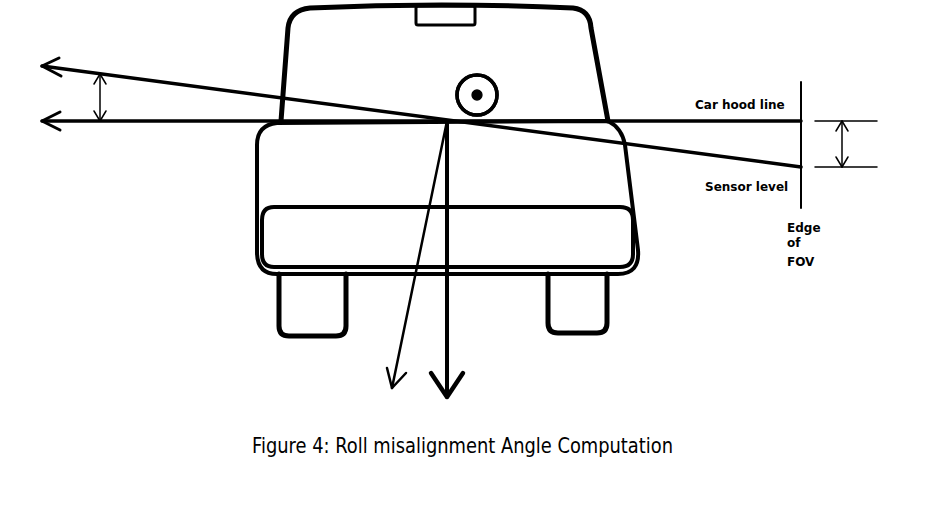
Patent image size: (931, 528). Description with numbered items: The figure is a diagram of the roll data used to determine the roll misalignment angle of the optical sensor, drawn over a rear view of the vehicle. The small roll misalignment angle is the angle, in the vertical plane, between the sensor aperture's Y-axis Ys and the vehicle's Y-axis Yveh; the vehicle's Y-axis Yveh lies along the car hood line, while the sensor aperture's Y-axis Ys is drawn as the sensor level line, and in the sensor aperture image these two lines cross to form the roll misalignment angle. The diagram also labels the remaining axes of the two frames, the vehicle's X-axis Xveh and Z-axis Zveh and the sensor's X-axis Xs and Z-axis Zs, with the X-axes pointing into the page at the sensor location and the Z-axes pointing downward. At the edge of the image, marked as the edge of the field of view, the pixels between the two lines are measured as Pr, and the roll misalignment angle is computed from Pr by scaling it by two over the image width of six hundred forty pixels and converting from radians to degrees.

The vehicle X axis (into page) Xveh is at (468, 85).
The sensor X axis (into page) Xs is at (478, 85).
The vehicle Y-axis Yveh is at (418, 136).
The sensor aperture Y-axis Ys is at (417, 103).
The vehicle Z axis Zveh is at (465, 271).
The sensor Z axis Zs is at (404, 267).
The pixels between the two lines Pr is at (846, 144).